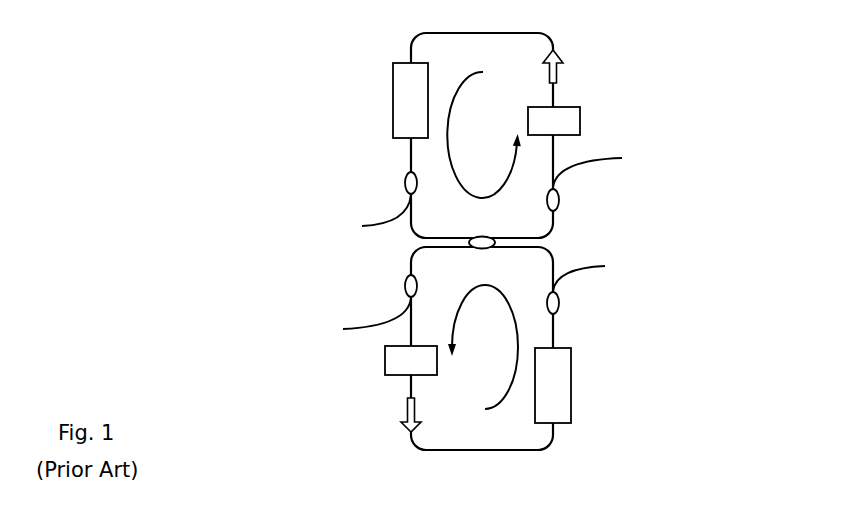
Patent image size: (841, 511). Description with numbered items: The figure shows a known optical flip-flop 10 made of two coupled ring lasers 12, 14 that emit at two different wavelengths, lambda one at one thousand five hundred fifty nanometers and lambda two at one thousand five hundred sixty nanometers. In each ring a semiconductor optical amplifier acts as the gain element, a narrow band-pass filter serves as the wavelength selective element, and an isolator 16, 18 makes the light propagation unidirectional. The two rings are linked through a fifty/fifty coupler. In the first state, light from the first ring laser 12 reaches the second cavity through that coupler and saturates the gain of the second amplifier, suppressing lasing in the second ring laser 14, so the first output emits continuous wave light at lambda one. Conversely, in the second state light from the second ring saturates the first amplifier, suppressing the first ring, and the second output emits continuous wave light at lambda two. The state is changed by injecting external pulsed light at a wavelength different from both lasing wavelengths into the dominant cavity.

The flip-flop 10 is at (188, 107).
The ring laser 12 is at (682, 127).
The ring laser 14 is at (682, 345).
The isolator 16 is at (562, 55).
The isolator 18 is at (404, 411).